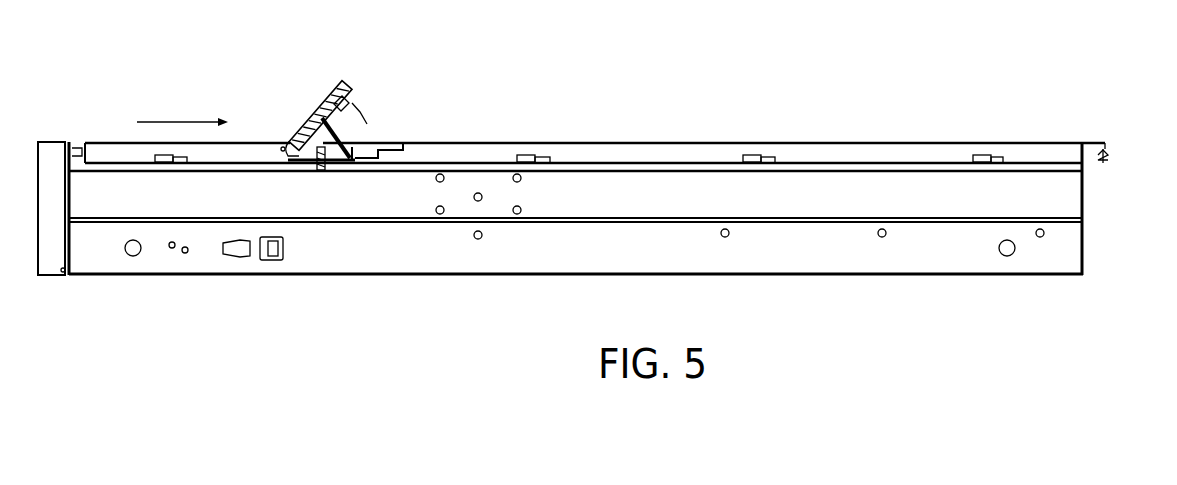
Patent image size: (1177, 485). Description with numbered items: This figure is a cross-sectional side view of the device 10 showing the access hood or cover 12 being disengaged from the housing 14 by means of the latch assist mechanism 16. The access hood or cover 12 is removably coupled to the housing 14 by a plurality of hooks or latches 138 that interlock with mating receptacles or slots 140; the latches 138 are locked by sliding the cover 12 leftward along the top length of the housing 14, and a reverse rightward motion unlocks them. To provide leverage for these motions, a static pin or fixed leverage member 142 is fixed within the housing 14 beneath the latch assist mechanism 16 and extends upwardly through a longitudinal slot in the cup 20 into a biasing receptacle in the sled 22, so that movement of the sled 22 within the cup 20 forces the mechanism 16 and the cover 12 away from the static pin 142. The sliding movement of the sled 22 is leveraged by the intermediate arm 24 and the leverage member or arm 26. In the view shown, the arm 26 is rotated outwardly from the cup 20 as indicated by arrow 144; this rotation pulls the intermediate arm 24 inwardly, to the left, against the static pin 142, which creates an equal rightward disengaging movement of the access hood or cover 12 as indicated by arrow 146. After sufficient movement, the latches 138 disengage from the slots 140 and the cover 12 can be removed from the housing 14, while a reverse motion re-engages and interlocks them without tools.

The device 10 is at (964, 86).
The access hood or cover 12 is at (595, 125).
The housing 14 is at (603, 222).
The latch assist mechanism 16 is at (328, 59).
The cup 20 is at (416, 227).
The sled 22 is at (339, 229).
The intermediate arm 24 is at (391, 129).
The leverage member or arm 26 is at (302, 115).
The hooks or latches 138 is at (163, 162).
The receptacles or slots 140 is at (618, 203).
The static pin or fixed leverage member 142 is at (299, 229).
The arrow 144 is at (393, 97).
The arrow 146 is at (176, 94).